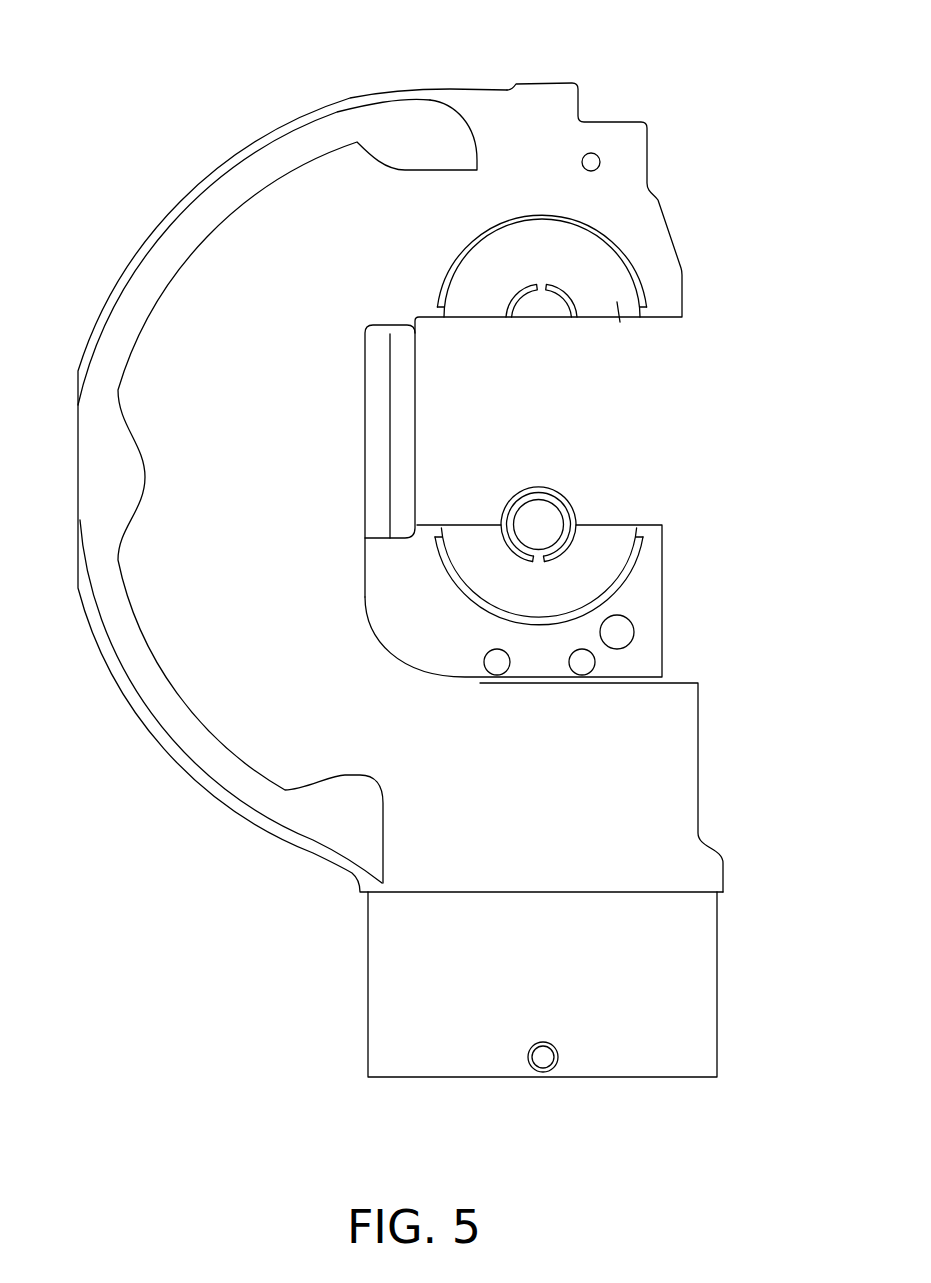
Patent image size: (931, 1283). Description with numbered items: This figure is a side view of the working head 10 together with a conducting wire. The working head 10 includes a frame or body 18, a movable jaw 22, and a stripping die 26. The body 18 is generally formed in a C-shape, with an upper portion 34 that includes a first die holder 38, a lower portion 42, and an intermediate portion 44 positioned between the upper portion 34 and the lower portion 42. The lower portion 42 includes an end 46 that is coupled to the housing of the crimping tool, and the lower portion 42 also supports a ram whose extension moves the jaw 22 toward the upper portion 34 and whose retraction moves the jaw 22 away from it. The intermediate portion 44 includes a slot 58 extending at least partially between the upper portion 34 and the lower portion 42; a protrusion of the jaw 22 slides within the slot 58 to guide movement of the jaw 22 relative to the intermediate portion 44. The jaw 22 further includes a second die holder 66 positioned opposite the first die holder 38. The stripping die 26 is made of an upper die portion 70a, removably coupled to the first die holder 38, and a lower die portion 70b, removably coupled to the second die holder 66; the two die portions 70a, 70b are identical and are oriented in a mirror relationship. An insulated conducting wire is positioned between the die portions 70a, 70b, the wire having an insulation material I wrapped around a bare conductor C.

The working head 10 is at (134, 111).
The body 18 is at (140, 396).
The movable jaw 22 is at (648, 640).
The stripping die 26 is at (605, 333).
The upper portion 34 is at (530, 145).
The first die holder 38 is at (603, 248).
The lower portion 42 is at (660, 782).
The intermediate portion 44 is at (417, 405).
The end 46 is at (647, 1080).
The slot 58 is at (390, 455).
The second die holder 66 is at (605, 560).
The upper die portion 70a is at (630, 328).
The lower die portion 70b is at (605, 543).
The bare conductor C is at (540, 525).
The insulation material I is at (568, 500).